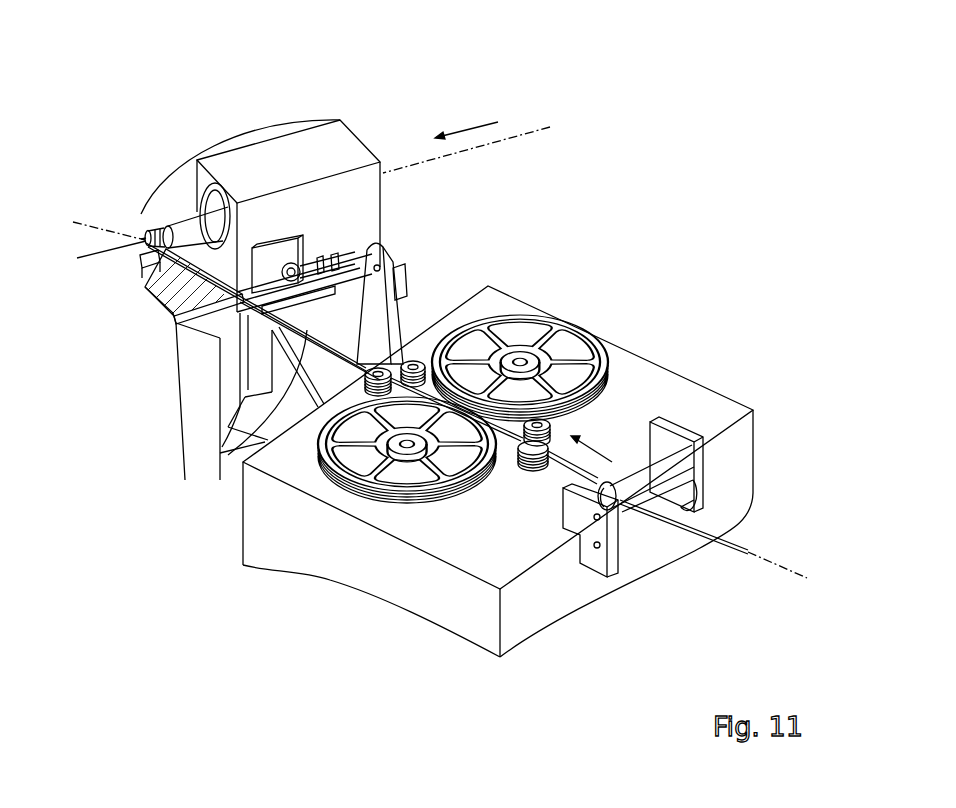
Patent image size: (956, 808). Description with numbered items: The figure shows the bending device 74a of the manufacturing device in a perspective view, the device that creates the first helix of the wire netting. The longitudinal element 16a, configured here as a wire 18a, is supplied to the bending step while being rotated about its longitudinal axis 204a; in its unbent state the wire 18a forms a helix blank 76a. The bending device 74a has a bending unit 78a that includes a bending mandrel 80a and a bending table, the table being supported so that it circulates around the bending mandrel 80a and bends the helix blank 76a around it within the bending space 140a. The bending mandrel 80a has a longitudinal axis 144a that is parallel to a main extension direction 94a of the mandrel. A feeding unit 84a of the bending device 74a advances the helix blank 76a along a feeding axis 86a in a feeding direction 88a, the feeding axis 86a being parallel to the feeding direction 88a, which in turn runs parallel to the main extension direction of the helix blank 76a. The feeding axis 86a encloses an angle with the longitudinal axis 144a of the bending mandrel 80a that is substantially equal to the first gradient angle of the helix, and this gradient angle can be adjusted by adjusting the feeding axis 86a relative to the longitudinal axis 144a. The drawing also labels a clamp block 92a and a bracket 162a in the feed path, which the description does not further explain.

The bending space 140a is at (167, 193).
The bending unit 78a is at (154, 208).
The bending mandrel 80a is at (142, 217).
The clamp block 92a is at (327, 241).
The main extension direction 94a is at (467, 128).
The bending device 74a is at (556, 100).
The longitudinal axis 144a is at (466, 150).
The feeding unit 84a is at (498, 309).
The guide bracket 162a is at (376, 298).
The feeding direction 88a is at (599, 446).
The longitudinal element 16a is at (231, 429).
The wire 18a is at (231, 429).
The helix blank 76a is at (185, 480).
The feeding axis 86a is at (476, 439).
The longitudinal axis 204a is at (748, 552).